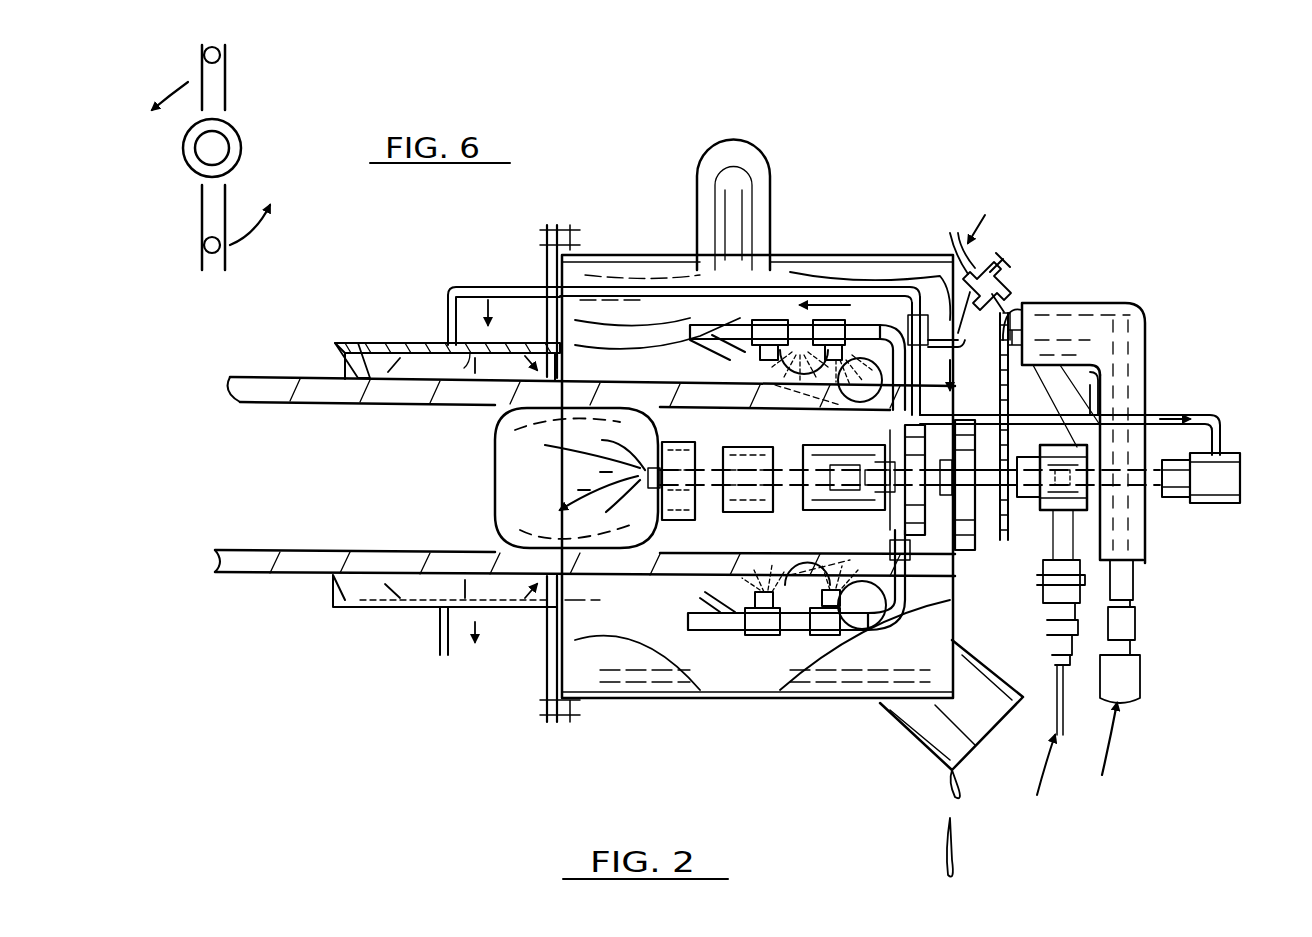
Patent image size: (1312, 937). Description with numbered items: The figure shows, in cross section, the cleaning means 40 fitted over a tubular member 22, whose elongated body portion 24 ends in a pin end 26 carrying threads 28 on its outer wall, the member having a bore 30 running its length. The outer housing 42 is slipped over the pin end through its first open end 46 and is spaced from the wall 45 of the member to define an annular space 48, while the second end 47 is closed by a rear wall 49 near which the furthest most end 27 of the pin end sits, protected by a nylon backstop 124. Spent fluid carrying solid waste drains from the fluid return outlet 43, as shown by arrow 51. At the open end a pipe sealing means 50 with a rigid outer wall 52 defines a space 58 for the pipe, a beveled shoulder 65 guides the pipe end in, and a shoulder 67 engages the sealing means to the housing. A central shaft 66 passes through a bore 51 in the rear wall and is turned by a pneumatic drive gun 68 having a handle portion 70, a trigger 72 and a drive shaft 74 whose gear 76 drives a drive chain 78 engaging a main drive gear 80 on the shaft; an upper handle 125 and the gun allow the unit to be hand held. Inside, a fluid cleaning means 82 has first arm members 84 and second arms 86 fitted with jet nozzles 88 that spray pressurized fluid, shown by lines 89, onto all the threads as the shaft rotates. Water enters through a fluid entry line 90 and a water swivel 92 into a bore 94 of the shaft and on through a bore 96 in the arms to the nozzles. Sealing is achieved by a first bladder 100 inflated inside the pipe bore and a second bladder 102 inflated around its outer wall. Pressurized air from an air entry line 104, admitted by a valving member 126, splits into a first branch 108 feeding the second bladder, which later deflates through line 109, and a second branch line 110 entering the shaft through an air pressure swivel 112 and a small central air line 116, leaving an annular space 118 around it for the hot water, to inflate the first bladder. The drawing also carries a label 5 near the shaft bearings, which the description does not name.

In FIG. 2, the bearing 5 is at (940, 425).
In FIG. 2, the tubular member 22 is at (600, 575).
In FIG. 2, the elongated body portion 24 is at (262, 578).
In FIG. 2, the pin end 26 is at (655, 368).
In FIG. 2, the furthest most end 27 is at (805, 445).
In FIG. 2, the threads 28 is at (680, 592).
In FIG. 2, the bore 30 is at (312, 490).
In FIG. 2, the cleaning means 40 is at (815, 242).
In FIG. 2, the outer housing 42 is at (668, 235).
In FIG. 2, the fluid return outlet 43 is at (978, 695).
In FIG. 2, the wall of the tubular member 45 is at (590, 400).
In FIG. 2, the first open end 46 is at (360, 580).
In FIG. 2, the second end 47 is at (935, 255).
In FIG. 2, the annular space 48 is at (630, 373).
In FIG. 2, the rear wall 49 is at (950, 610).
In FIG. 2, the pipe sealing means 50 is at (385, 335).
In FIG. 2, the bore in the rear wall 51 is at (985, 560).
In FIG. 2, the outer wall 52 is at (370, 343).
In FIG. 2, the space 58 is at (330, 343).
In FIG. 2, the beveled shoulder 65 is at (340, 578).
In FIG. 6, the central shaft 66 is at (183, 148).
In FIG. 2, the central shaft 66 is at (690, 460).
In FIG. 2, the shoulder 67 is at (548, 715).
In FIG. 2, the pneumatic drive gun 68 is at (1130, 330).
In FIG. 2, the handle portion 70 is at (1125, 550).
In FIG. 2, the trigger 72 is at (1090, 388).
In FIG. 2, the drive shaft 74 is at (1025, 300).
In FIG. 2, the gear 76 is at (1000, 365).
In FIG. 2, the drive chain 78 is at (975, 540).
In FIG. 2, the main drive gear 80 is at (1006, 520).
In FIG. 2, the fluid cleaning means 82 is at (870, 630).
In FIG. 6, the first arm members 84 is at (225, 75).
In FIG. 2, the first arm members 84 is at (915, 328).
In FIG. 6, the second arms 86 is at (204, 55).
In FIG. 2, the second arms 86 is at (795, 325).
In FIG. 2, the jet nozzles 88 is at (760, 360).
In FIG. 2, the lines 89 is at (820, 385).
In FIG. 2, the fluid entry line 90 is at (1070, 560).
In FIG. 2, the water swivel 92 is at (1060, 510).
In FIG. 6, the bore 94 is at (230, 150).
In FIG. 2, the bore 94 is at (935, 468).
In FIG. 6, the bore 96 is at (225, 110).
In FIG. 2, the first bladder 100 is at (500, 470).
In FIG. 2, the second bladder 102 is at (415, 618).
In FIG. 2, the air entry line 104 is at (960, 255).
In FIG. 2, the first branch 108 is at (490, 300).
In FIG. 2, the line 109 is at (450, 650).
In FIG. 2, the second branch line 110 is at (1215, 412).
In FIG. 2, the air pressure swivel 112 is at (1222, 495).
In FIG. 2, the central air line 116 is at (825, 505).
In FIG. 6, the annular space 118 is at (187, 130).
In FIG. 2, the protective nylon backstop 124 is at (780, 455).
In FIG. 2, the upper handle 125 is at (745, 170).
In FIG. 2, the valving member 126 is at (1008, 262).